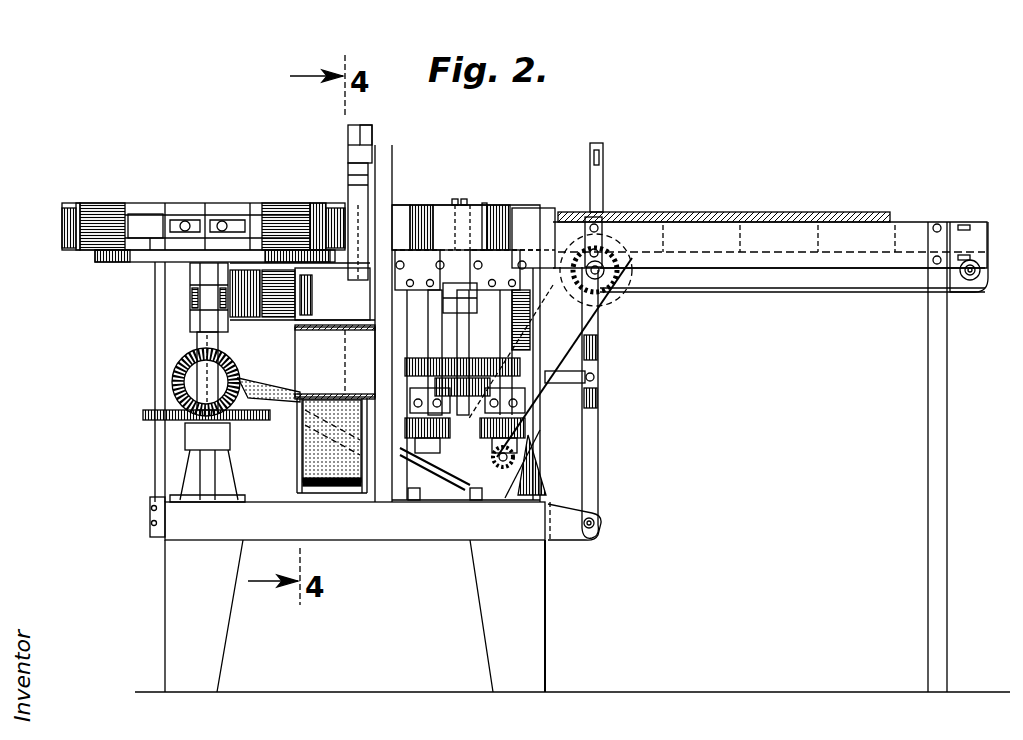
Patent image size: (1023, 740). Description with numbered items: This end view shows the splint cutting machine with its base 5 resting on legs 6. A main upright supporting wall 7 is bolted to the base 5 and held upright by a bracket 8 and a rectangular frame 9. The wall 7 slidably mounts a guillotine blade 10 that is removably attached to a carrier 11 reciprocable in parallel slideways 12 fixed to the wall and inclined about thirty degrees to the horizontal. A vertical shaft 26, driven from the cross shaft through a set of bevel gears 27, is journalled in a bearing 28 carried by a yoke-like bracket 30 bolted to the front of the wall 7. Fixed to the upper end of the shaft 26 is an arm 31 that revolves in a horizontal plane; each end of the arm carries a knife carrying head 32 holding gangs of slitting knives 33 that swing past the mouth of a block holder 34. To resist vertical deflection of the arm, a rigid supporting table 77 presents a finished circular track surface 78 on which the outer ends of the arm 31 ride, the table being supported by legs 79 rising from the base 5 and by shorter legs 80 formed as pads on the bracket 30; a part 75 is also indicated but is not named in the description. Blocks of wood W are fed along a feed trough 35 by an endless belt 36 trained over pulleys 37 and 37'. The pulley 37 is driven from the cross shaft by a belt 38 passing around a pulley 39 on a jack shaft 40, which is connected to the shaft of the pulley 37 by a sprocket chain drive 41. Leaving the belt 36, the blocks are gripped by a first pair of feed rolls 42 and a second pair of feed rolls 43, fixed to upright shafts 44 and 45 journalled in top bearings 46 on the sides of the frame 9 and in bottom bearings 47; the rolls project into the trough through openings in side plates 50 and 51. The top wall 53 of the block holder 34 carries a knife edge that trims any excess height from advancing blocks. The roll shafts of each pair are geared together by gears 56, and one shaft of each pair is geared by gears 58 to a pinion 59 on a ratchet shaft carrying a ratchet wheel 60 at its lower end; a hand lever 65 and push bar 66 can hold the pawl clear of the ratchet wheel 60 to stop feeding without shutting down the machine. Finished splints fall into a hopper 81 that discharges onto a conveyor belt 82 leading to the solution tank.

The base 5 is at (368, 540).
The legs 6 is at (172, 586).
The main upright supporting wall 7 is at (385, 150).
The bracket 8 is at (427, 502).
The rectangular frame 9 is at (585, 410).
The guillotine blade 10 is at (365, 125).
The carrier 11 is at (347, 132).
The parallel slideways 12 is at (373, 176).
The vertical shaft 26 is at (205, 345).
The set of bevel gears 27 is at (175, 402).
The bearing 28 is at (198, 292).
The yoke-like bracket 30 is at (255, 318).
The arm 31 is at (240, 204).
The knife carrying head 32 is at (78, 205).
The slitting knives 33 is at (62, 222).
The block holder 34 is at (440, 205).
The feed trough 35 is at (905, 224).
The endless continuously travelling belt 36 is at (865, 292).
The pulley 37 is at (613, 270).
The pulley 37' is at (983, 278).
The belt 38 is at (277, 412).
The pulley 39 is at (420, 500).
The jack shaft 40 is at (520, 462).
The sprocket chain drive 41 is at (612, 322).
The first pair of feed rolls 42 is at (500, 210).
The second pair of feed rolls 43 is at (420, 210).
The upright shaft 44 is at (500, 322).
The upright shaft 45 is at (370, 352).
The top bearings 46 is at (440, 262).
The bottom bearings 47 is at (492, 397).
The plate 50 is at (547, 210).
The plate 51 is at (485, 212).
The top wall 53 is at (393, 205).
The gears 56 is at (470, 432).
The gears 58 is at (415, 370).
The pinion 59 is at (430, 355).
The ratchet wheel 60 is at (470, 356).
The hand lever 65 is at (603, 143).
The push bar 66 is at (575, 387).
The flange 75 is at (76, 208).
The rigid supporting table 77 is at (98, 262).
The finished circular track surface 78 is at (150, 250).
The legs 79 is at (157, 327).
The shorter legs 80 is at (280, 268).
The hopper 81 is at (312, 312).
The conveyor belt 82 is at (325, 493).
The blocks of wood W is at (660, 212).